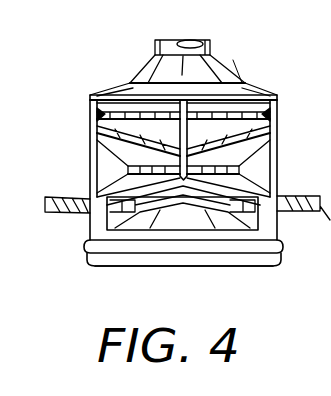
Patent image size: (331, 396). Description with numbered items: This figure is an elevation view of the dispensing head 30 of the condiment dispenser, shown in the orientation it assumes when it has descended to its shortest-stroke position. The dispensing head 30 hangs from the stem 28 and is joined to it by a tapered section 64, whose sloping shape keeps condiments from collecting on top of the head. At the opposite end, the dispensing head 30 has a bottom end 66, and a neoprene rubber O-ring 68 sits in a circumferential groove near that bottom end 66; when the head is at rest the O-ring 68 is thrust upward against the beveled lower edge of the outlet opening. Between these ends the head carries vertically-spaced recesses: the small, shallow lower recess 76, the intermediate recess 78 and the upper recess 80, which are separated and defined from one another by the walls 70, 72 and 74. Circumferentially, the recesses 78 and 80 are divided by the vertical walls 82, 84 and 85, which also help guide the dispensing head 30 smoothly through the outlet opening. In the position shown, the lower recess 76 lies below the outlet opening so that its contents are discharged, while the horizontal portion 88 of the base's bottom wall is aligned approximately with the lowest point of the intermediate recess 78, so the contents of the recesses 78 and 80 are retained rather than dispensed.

The stem 28 is at (160, 42).
The dispensing head 30 is at (137, 60).
The vertical wall 82 is at (178, 115).
The tapered section 64 is at (213, 85).
The wall 74 is at (257, 97).
The upper recess 80 is at (100, 117).
The wall 72 is at (97, 137).
The vertical wall 85 is at (145, 167).
The intermediate recess 78 is at (110, 162).
The wall 70 is at (250, 182).
The vertical wall 84 is at (278, 177).
The horizontal portion of bottom wall 88 is at (47, 200).
The lower recess 76 is at (122, 208).
The O-ring 68 is at (283, 247).
The bottom end 66 is at (200, 267).